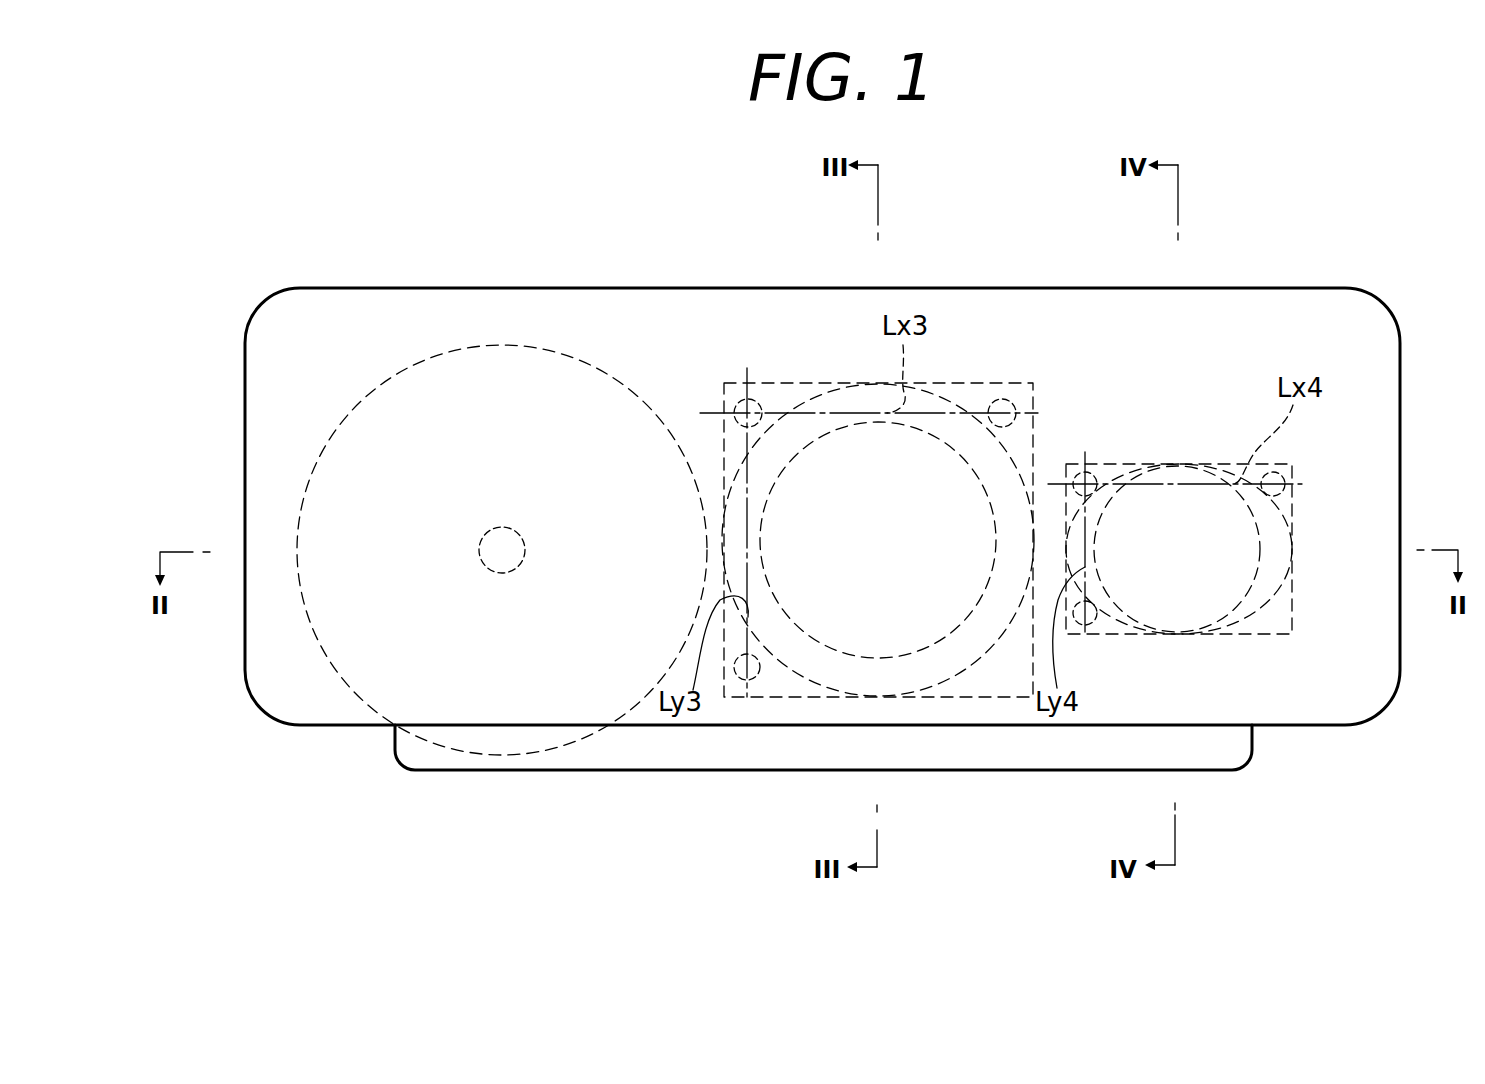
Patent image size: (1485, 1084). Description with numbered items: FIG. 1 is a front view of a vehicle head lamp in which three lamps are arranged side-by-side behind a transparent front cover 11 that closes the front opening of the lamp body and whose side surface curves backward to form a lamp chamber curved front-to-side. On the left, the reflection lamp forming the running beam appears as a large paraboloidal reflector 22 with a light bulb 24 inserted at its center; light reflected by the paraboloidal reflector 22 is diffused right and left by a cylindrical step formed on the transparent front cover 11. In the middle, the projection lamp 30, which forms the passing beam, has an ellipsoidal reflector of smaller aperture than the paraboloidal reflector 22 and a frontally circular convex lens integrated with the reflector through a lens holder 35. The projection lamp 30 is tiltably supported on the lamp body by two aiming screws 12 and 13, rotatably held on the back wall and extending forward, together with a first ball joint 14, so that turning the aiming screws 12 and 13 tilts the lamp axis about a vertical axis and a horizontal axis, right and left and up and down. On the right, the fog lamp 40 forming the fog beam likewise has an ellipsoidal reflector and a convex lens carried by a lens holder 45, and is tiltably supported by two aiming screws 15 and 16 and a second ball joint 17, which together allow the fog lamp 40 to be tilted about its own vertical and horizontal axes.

The transparent front cover 11 is at (1045, 323).
The aiming screw 12 is at (1010, 402).
The aiming screw 13 is at (765, 683).
The first ball joint 14 is at (734, 393).
The aiming screw 15 is at (1280, 466).
The aiming screw 16 is at (1100, 632).
The second ball joint 17 is at (1098, 472).
The paraboloidal reflector 22 is at (488, 336).
The light bulb 24 is at (479, 550).
The projection lamp 30 is at (966, 397).
The lens holder 35 is at (785, 370).
The fog lamp 40 is at (1234, 438).
The lens holder 45 is at (1305, 625).